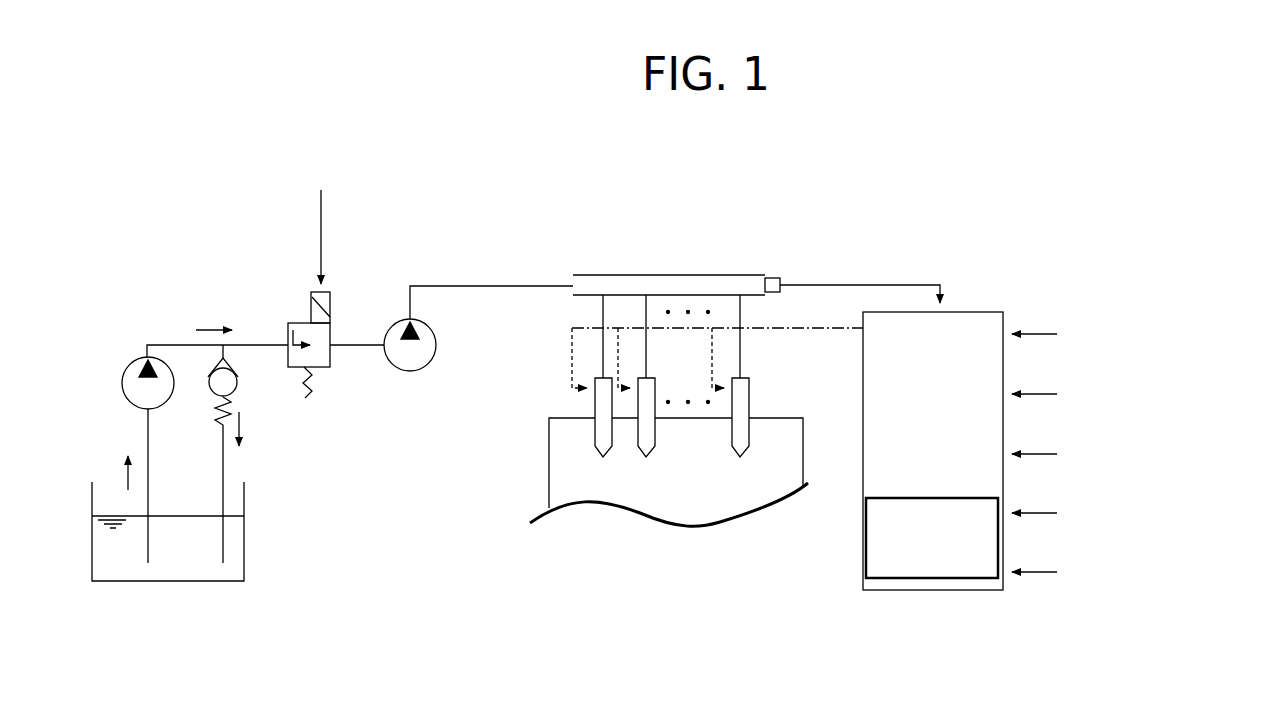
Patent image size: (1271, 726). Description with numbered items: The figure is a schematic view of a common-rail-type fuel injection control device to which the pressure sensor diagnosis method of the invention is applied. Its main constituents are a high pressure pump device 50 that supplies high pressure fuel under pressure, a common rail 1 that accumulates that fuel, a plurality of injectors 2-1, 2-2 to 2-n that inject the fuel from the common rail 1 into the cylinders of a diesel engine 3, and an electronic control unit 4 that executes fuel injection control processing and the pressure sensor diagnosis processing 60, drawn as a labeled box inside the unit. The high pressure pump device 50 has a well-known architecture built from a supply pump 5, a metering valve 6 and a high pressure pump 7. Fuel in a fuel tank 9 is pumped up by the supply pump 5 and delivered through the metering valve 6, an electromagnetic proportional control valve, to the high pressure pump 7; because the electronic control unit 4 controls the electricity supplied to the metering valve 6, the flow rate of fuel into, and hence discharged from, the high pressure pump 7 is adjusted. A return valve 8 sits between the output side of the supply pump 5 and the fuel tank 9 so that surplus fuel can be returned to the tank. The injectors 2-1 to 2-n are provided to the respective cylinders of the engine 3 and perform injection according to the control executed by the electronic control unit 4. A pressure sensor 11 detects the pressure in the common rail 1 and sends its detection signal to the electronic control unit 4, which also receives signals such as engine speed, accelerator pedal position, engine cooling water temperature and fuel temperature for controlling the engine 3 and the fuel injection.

The common rail 1 is at (654, 283).
The pressure sensor 11 is at (773, 278).
The injector 2-1 is at (600, 458).
The injector 2-2 is at (657, 457).
The injector 2-n is at (751, 457).
The diesel engine 3 is at (803, 460).
The electronic control unit 4 is at (968, 311).
The supply pump 5 is at (122, 378).
The metering valve 6 is at (330, 360).
The high pressure pump 7 is at (436, 347).
The return valve 8 is at (237, 385).
The fuel tank 9 is at (244, 530).
The high pressure pump device 50 is at (362, 282).
The pressure sensor diagnosis processing 60 is at (958, 580).